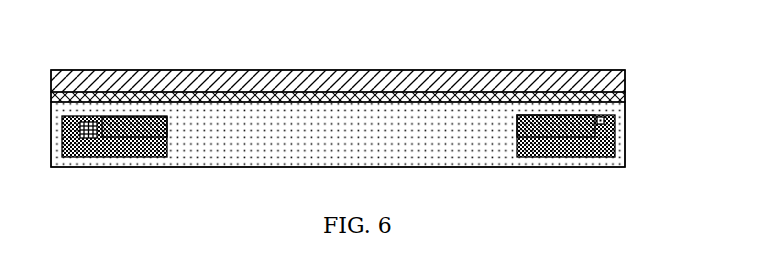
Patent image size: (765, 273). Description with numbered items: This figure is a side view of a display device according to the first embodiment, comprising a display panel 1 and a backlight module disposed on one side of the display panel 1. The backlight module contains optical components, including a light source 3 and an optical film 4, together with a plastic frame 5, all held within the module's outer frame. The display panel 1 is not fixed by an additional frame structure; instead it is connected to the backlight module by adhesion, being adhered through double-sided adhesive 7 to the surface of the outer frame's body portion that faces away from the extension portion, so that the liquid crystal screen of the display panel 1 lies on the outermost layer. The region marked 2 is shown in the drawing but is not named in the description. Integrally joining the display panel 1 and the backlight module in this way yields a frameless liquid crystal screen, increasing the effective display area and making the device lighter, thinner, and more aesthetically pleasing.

The display panel 1 is at (623, 70).
The substrate 2 is at (617, 134).
The light source 3 is at (63, 117).
The optical film 4 is at (605, 117).
The plastic frame 5 is at (62, 142).
The double-sided adhesive 7 is at (625, 98).